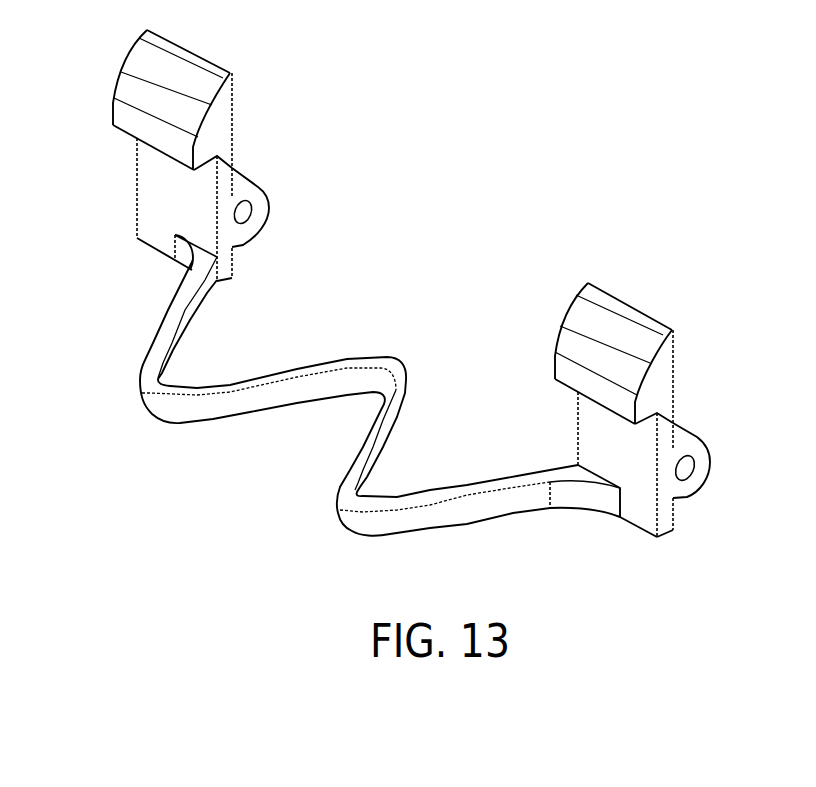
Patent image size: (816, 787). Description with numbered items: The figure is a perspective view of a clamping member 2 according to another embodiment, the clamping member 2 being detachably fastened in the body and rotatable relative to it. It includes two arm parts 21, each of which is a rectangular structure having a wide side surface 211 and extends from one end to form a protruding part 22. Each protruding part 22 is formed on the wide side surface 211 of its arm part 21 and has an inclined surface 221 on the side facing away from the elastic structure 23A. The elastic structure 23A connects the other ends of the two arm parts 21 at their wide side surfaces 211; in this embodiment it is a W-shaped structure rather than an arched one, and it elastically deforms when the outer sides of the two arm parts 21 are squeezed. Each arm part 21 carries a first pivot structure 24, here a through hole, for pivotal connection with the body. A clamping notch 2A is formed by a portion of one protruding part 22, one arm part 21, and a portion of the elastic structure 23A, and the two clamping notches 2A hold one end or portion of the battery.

The clamping member 2 is at (699, 57).
The arm part 21 is at (405, 305).
The wide side surface 211 is at (160, 177).
The protruding part 22 is at (395, 224).
The inclined surface 221 is at (147, 60).
The elastic structure 23A is at (343, 368).
The first pivot structure 24 is at (248, 214).
The clamping notch 2A is at (190, 202).